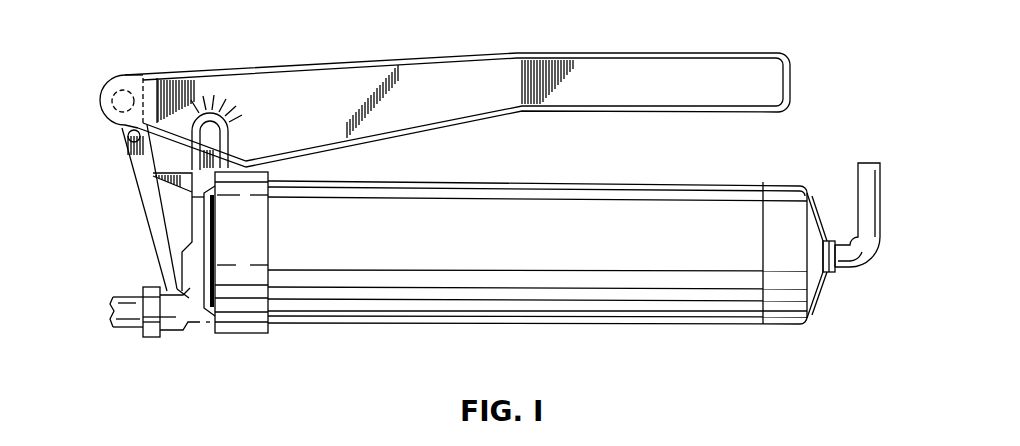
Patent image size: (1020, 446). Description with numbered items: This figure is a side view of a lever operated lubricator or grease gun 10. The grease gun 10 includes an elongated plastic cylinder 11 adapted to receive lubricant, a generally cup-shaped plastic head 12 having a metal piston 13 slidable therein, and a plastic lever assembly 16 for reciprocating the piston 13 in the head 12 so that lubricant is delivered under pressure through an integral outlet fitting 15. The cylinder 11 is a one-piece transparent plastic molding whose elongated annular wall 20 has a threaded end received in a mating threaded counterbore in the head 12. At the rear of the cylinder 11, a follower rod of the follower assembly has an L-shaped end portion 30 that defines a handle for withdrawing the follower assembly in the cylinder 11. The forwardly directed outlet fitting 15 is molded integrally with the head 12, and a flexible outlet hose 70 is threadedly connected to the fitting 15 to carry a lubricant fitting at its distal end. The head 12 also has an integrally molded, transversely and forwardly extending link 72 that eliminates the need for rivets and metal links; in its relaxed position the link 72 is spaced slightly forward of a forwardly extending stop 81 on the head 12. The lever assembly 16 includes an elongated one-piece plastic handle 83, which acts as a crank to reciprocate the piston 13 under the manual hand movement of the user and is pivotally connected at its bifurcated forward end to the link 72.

The lever operated lubricator 10 is at (356, 341).
The cylinder 11 is at (670, 327).
The head 12 is at (232, 337).
The piston 13 is at (208, 160).
The outlet fitting 15 is at (152, 338).
The lever assembly 16 is at (93, 96).
The annular wall 20 is at (555, 182).
The L-shaped end portion 30 is at (865, 262).
The flexible outlet hose 70 is at (123, 328).
The link 72 is at (130, 209).
The stop 81 is at (163, 172).
The handle 83 is at (482, 55).